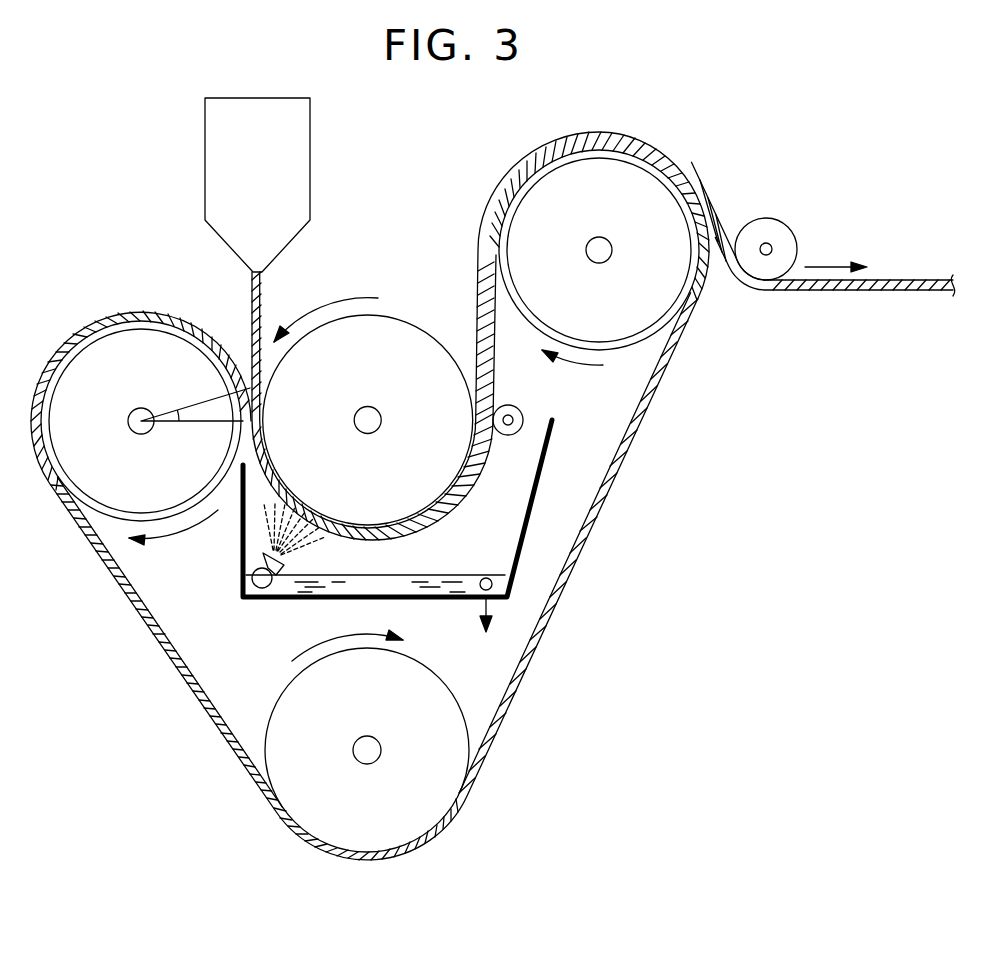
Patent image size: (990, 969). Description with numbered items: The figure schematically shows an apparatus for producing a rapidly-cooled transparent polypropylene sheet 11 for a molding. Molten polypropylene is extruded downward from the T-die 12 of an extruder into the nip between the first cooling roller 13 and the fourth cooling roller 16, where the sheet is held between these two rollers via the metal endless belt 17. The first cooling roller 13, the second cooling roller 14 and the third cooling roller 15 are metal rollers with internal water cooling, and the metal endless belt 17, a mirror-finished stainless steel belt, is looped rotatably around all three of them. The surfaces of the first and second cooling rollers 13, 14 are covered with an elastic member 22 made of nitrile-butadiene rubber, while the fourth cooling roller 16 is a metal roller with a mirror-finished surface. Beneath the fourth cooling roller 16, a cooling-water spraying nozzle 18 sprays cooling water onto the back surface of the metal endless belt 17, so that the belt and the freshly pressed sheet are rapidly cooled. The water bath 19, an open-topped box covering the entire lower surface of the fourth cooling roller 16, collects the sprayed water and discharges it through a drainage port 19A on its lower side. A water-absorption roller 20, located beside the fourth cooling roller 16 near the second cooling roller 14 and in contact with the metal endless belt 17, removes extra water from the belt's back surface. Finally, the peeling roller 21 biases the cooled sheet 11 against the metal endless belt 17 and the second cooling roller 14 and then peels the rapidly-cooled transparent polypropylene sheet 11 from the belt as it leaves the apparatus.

The rapidly-cooled transparent polypropylene sheet 11 is at (876, 290).
The T-die 12 is at (307, 132).
The first cooling roller 13 is at (92, 372).
The second cooling roller 14 is at (531, 153).
The third cooling roller 15 is at (440, 800).
The fourth cooling roller 16 is at (385, 350).
The metal endless belt 17 is at (588, 542).
The cooling-water spraying nozzle 18 is at (252, 569).
The water bath 19 is at (544, 472).
The drainage port 19A is at (480, 588).
The water-absorption roller 20 is at (524, 412).
The peeling roller 21 is at (765, 220).
The elastic member 22 is at (142, 325).